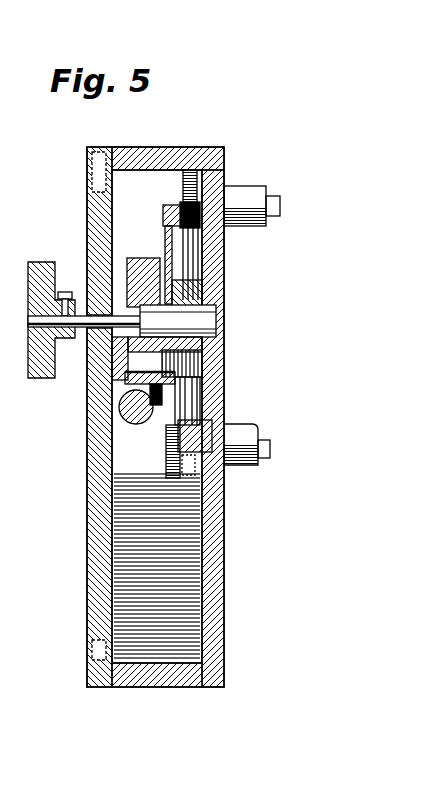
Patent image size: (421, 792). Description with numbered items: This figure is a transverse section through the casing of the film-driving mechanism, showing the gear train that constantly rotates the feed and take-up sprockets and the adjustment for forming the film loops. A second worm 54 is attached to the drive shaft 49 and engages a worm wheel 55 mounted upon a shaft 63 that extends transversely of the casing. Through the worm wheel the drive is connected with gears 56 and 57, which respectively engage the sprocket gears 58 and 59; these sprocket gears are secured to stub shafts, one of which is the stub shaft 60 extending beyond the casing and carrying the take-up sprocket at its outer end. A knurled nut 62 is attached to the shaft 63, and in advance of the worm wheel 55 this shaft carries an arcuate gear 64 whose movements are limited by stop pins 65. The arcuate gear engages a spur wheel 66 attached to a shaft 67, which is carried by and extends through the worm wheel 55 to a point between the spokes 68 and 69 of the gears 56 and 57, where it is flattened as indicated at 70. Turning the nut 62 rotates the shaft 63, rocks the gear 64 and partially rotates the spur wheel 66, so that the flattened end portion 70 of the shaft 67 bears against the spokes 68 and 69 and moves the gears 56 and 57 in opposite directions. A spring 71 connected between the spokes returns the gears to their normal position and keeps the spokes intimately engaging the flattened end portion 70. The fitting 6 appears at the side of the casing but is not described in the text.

The inlet fitting 6 is at (270, 197).
The drive shaft 49 is at (138, 418).
The second worm 54 is at (118, 404).
The worm wheel 55 is at (130, 276).
The gear 56 is at (164, 213).
The gear 57 is at (206, 430).
The sprocket gear 58 is at (166, 461).
The sprocket gear 59 is at (220, 169).
The stub shaft 60 is at (270, 446).
The knurled nut 62 is at (40, 262).
The shaft 63 is at (208, 322).
The arcuate gear 64 is at (126, 343).
The stop pins 65 is at (118, 298).
The spur wheel 66 is at (150, 390).
The shaft 67 is at (126, 374).
The spoke 68 is at (170, 252).
The spoke 69 is at (203, 256).
The flattened end portion 70 is at (200, 352).
The spring 71 is at (196, 410).